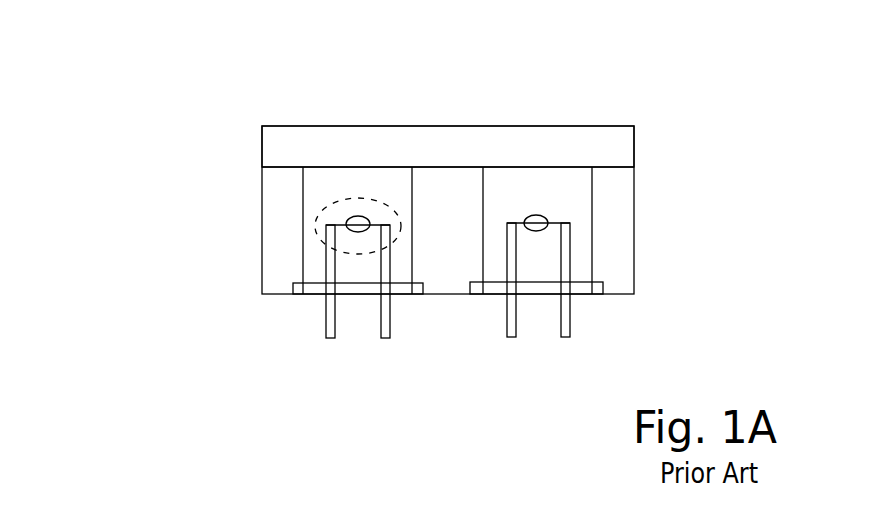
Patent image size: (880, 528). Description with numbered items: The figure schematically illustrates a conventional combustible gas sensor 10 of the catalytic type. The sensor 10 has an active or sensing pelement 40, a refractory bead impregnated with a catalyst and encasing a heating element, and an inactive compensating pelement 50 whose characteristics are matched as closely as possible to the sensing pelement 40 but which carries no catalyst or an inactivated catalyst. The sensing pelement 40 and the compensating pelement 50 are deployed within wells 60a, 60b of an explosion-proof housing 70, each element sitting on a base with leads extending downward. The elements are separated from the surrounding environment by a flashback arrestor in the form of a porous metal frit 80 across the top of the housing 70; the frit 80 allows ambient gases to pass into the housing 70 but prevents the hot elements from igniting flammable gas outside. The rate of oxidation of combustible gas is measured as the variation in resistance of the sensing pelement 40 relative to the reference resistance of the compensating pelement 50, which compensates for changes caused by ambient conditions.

The combustible gas sensor 10 is at (222, 218).
The active or sensing pelement 40 is at (305, 215).
The compensating pelement 50 is at (516, 207).
The well 60a is at (401, 261).
The well 60b is at (582, 246).
The explosion-proof housing 70 is at (640, 196).
The porous metal frit 80 is at (270, 140).